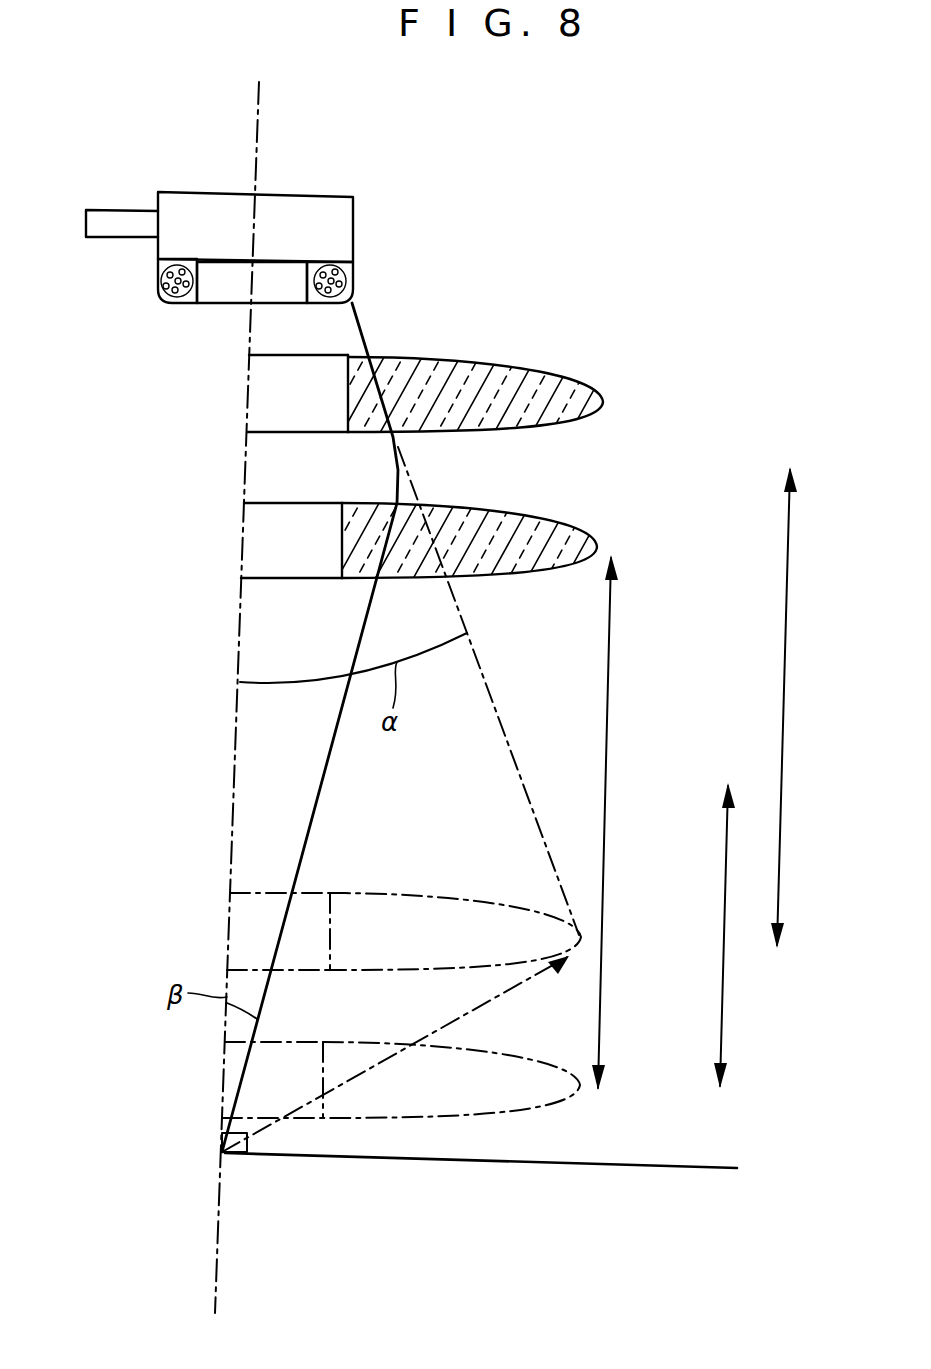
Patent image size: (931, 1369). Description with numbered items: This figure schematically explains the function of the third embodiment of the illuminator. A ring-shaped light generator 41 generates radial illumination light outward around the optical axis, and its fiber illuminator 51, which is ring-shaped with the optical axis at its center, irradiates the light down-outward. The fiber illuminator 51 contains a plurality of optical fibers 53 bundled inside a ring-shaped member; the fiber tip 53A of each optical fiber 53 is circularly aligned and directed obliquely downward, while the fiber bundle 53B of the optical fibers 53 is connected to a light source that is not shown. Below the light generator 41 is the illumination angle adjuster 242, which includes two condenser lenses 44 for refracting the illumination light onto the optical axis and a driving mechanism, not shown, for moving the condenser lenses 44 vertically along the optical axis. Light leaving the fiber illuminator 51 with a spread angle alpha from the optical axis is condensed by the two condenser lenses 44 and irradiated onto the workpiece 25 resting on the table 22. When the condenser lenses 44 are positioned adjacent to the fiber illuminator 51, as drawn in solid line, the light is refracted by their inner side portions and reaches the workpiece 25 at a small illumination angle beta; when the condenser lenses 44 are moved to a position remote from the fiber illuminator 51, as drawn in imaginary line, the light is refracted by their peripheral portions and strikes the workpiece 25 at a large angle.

The light generator 41 is at (271, 253).
The fiber illuminator 51 is at (340, 228).
The optical fiber 53 is at (352, 278).
The fiber tip 53A is at (160, 294).
The fiber bundle 53B is at (140, 210).
The illumination angle adjuster 242 is at (569, 350).
The condenser lens 44 is at (591, 388).
The table 22 is at (620, 1163).
The workpiece 25 is at (247, 1148).